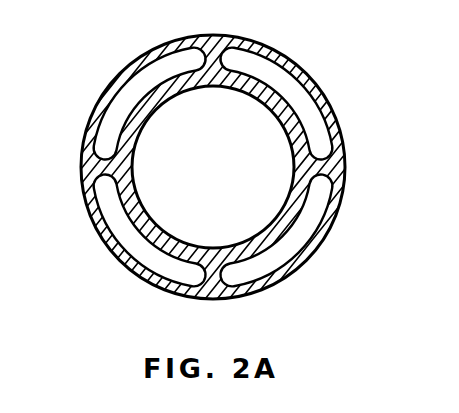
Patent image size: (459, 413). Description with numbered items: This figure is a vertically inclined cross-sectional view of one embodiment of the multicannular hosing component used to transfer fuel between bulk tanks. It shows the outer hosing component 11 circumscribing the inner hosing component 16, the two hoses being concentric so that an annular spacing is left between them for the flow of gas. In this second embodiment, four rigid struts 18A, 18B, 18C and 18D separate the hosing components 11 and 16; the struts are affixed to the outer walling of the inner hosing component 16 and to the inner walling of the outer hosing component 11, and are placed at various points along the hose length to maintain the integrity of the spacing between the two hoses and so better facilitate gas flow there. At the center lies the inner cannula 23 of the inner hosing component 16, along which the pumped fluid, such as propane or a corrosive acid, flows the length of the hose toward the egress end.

The outer hosing component 11 is at (297, 63).
The inner hosing component 16 is at (293, 110).
The rigid strut 18A is at (210, 47).
The rigid strut 18B is at (95, 160).
The rigid strut 18C is at (208, 282).
The rigid strut 18D is at (335, 167).
The inner cannula 23 is at (163, 196).